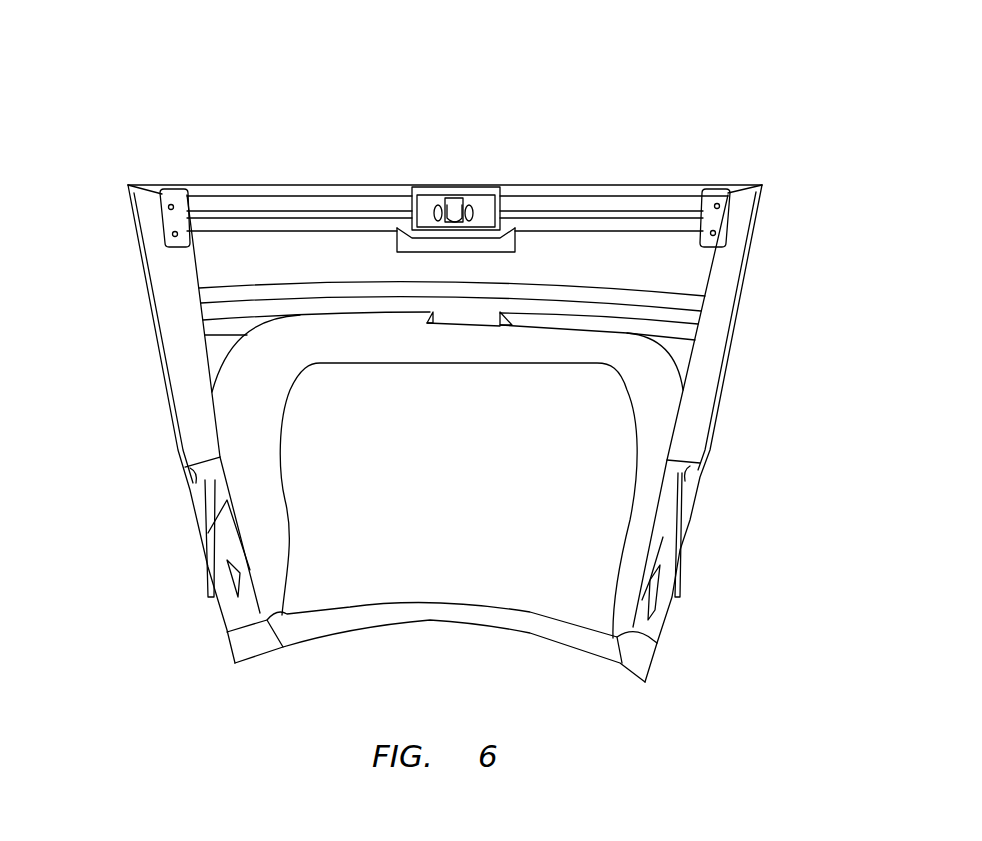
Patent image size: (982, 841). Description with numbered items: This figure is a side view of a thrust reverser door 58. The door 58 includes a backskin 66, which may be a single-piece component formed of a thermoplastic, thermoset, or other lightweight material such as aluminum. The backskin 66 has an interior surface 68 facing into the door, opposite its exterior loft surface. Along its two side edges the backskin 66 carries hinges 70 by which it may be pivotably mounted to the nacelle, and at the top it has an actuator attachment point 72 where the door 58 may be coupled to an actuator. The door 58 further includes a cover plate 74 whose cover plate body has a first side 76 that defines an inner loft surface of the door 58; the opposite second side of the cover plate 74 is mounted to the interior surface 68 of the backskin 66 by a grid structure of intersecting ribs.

The door 58 is at (675, 122).
The backskin 66 is at (219, 164).
The interior surface 68 is at (320, 255).
The hinges 70 is at (172, 298).
The actuator attachment point 72 is at (459, 181).
The cover plate 74 is at (534, 588).
The first side 76 is at (545, 487).